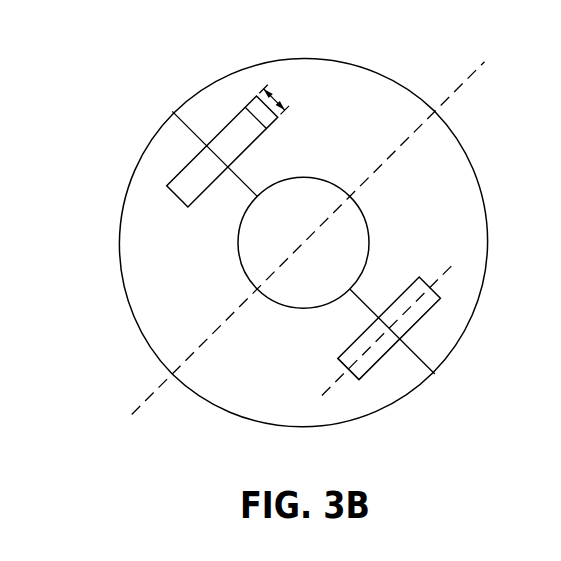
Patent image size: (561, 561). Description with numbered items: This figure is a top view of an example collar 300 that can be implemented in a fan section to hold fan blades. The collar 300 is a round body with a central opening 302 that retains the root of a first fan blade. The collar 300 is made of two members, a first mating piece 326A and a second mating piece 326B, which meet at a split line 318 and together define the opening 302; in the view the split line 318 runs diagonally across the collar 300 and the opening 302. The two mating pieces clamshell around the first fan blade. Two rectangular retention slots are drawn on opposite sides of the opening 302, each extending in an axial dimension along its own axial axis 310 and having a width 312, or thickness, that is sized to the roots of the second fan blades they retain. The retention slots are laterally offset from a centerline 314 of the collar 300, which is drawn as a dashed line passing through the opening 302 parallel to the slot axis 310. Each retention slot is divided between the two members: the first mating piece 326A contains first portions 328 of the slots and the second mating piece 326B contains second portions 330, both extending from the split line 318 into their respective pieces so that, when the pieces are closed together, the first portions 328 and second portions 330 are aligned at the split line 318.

The collar 300 is at (105, 80).
The opening 302 is at (270, 251).
The axial axis 310 is at (450, 267).
The width 312 is at (286, 93).
The centerline 314 is at (481, 70).
The split line 318 is at (178, 117).
The first mating piece 326A is at (487, 218).
The second mating piece 326B is at (143, 325).
The first portions 328 is at (248, 128).
The second portions 330 is at (190, 200).